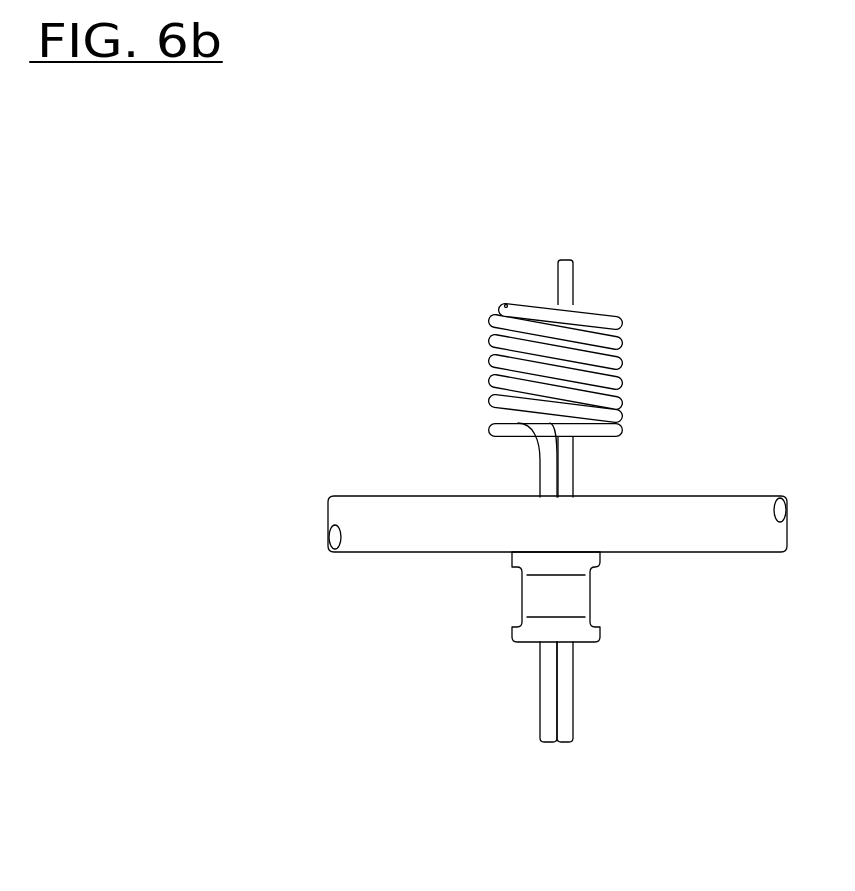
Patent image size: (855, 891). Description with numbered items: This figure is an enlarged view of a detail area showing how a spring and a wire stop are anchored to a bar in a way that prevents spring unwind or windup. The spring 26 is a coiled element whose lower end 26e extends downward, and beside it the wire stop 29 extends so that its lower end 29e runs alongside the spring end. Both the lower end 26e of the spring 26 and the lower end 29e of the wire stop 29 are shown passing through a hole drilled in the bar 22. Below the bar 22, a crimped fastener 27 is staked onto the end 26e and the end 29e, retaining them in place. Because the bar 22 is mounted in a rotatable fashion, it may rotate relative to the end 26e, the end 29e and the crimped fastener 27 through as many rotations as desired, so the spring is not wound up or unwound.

The bar 22 is at (718, 565).
The spring 26 is at (468, 443).
The lower end of spring 26e is at (540, 702).
The crimped fastener 27 is at (505, 603).
The wire stop 29 is at (588, 283).
The lower end of wire stop 29e is at (573, 700).